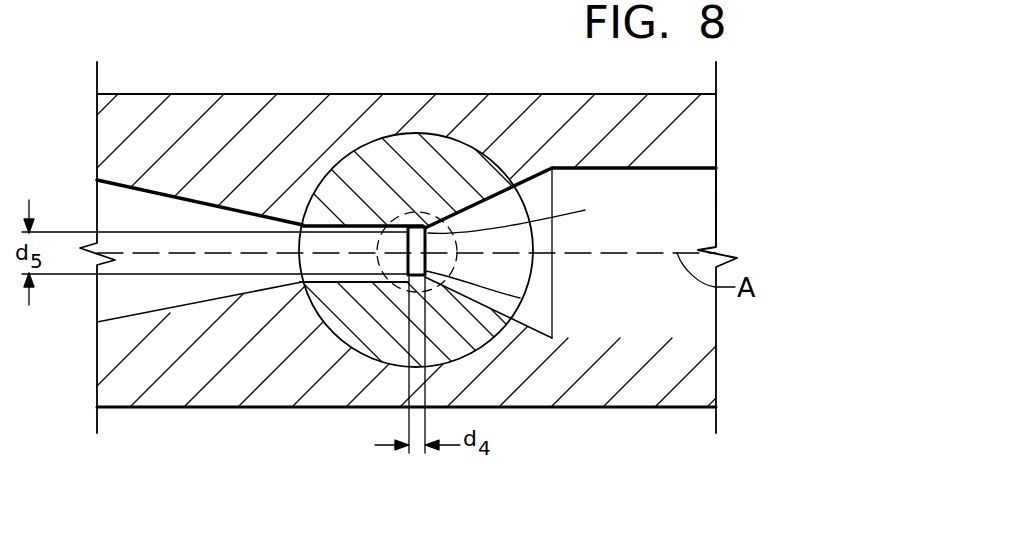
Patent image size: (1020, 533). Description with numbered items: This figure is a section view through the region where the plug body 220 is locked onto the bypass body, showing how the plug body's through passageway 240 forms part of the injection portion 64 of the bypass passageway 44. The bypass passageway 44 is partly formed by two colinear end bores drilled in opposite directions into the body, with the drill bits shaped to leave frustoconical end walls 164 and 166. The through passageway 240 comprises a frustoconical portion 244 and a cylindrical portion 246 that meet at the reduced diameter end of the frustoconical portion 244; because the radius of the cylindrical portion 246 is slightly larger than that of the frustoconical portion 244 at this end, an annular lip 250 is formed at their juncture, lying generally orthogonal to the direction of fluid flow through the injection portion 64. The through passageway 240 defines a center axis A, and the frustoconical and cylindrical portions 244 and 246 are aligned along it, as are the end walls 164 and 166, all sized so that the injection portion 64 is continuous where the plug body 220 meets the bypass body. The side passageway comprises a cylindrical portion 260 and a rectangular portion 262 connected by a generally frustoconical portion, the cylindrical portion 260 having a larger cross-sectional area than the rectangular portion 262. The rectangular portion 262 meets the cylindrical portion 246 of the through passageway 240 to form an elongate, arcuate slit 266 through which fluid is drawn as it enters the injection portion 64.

The bypass passageway 44 is at (742, 228).
The injection portion 64 is at (731, 199).
The frustoconical end wall 164 is at (546, 170).
The frustoconical end wall 166 is at (147, 190).
The plug body 220 is at (490, 343).
The through passageway 240 is at (607, 265).
The frustoconical portion 244 is at (526, 216).
The cylindrical portion 246 is at (340, 245).
The annular lip 250 is at (384, 210).
The cylindrical portion 260 is at (488, 258).
The rectangular portion 262 is at (535, 213).
The arcuate slit 266 is at (520, 298).